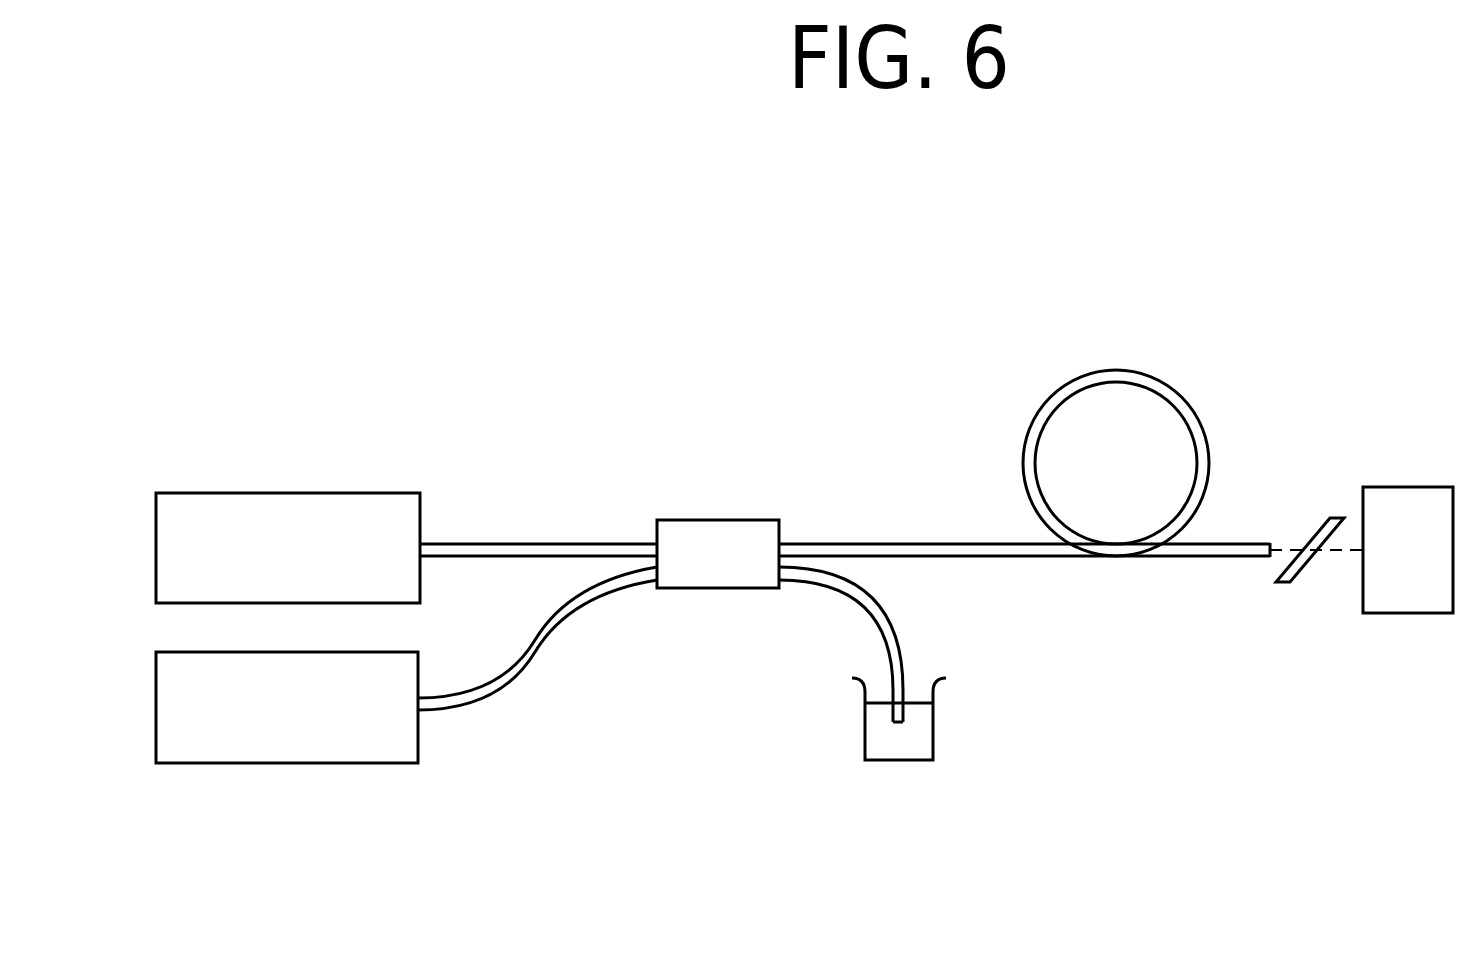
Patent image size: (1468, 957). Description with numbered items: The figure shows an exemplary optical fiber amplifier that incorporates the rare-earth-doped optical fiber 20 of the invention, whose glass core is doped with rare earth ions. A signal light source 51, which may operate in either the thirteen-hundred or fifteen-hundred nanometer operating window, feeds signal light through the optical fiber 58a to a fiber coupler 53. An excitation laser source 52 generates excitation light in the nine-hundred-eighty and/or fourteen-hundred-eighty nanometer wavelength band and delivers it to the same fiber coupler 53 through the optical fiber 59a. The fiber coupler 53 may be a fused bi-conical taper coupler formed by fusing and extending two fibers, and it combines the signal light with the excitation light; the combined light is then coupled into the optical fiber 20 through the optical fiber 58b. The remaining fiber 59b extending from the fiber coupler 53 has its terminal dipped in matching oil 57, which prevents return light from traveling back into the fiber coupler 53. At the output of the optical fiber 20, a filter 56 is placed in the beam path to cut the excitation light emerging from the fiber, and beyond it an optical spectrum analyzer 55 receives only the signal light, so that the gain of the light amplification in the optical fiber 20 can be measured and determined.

The optical fiber 20 is at (1050, 550).
The signal light source 51 is at (334, 492).
The excitation laser source 52 is at (347, 765).
The fiber coupler 53 is at (697, 520).
The optical spectrum analyzer 55 is at (1397, 487).
The filter 56 is at (1297, 577).
The matching oil 57 is at (920, 737).
The optical fiber 58a is at (527, 543).
The optical fiber 58b is at (849, 543).
The optical fiber 59a is at (523, 657).
The optical fiber 59b is at (827, 590).